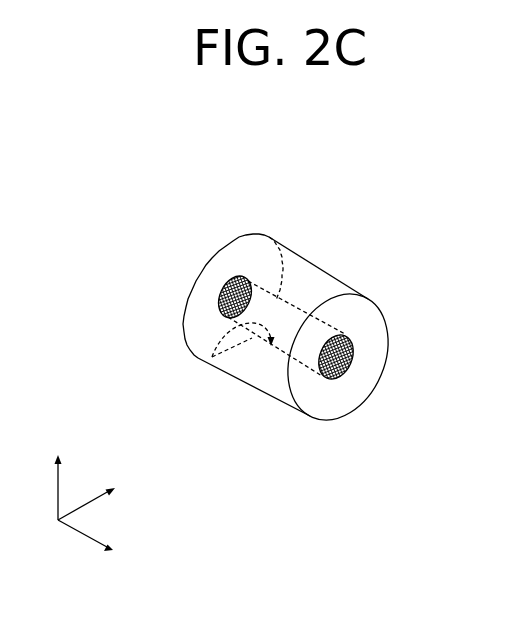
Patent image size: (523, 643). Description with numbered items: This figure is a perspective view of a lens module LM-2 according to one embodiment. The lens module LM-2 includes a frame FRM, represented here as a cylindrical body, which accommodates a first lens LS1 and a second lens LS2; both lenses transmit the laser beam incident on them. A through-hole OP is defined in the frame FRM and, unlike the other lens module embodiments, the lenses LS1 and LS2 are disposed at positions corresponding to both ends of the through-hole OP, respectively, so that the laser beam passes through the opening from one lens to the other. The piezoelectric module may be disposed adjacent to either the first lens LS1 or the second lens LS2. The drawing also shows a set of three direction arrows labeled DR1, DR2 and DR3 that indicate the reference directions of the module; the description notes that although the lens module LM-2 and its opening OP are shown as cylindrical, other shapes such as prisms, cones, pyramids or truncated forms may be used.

The lens module LM-2 is at (177, 201).
The frame FRM is at (319, 268).
The first lens LS1 is at (352, 364).
The second lens LS2 is at (222, 286).
The through-hole OP is at (227, 366).
The first direction DR1 is at (108, 544).
The second direction DR2 is at (109, 496).
The third direction DR3 is at (58, 471).